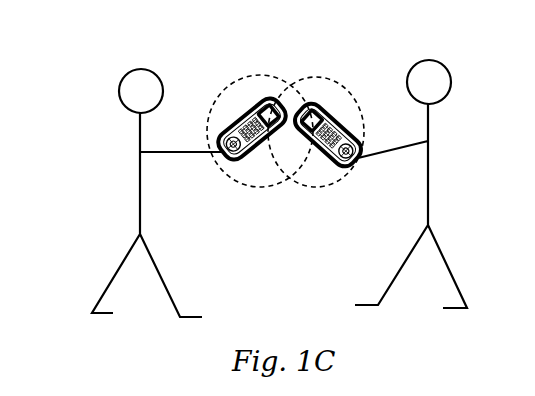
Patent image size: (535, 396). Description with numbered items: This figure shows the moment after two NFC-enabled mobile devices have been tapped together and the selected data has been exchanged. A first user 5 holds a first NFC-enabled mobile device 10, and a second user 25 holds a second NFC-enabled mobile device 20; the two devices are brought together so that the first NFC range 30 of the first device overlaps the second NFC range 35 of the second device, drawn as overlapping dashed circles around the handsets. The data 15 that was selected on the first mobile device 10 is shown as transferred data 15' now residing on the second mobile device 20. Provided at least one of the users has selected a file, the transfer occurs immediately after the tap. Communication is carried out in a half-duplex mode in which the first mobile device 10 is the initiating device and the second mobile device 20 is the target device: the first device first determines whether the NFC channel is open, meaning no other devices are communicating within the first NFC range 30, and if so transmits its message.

The first user 5 is at (140, 113).
The first NFC-enabled mobile device 10 is at (243, 113).
The data 15 is at (259, 176).
The transferred data 15' is at (347, 179).
The second NFC-enabled mobile device 20 is at (328, 104).
The second user 25 is at (429, 108).
The first NFC range 30 is at (245, 77).
The second NFC range 35 is at (313, 77).